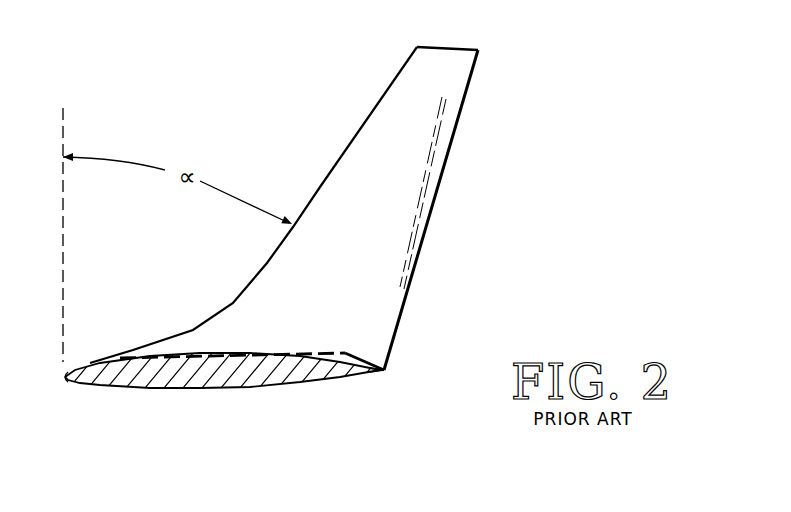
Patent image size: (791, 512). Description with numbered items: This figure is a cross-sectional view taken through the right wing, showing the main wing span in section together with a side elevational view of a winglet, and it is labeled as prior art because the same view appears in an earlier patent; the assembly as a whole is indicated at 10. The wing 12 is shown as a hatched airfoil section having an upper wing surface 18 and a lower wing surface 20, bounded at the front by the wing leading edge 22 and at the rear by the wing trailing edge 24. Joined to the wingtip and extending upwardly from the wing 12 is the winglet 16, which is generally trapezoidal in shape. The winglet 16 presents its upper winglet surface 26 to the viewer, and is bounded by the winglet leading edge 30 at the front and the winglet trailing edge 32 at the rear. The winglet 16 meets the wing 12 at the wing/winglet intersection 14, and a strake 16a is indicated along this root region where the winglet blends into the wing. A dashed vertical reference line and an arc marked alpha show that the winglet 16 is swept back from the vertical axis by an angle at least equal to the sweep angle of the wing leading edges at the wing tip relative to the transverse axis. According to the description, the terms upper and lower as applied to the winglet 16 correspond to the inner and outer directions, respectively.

The prior art aircraft tail assembly 10 is at (295, 251).
The wing 12 is at (251, 376).
The wing/winglet intersection 14 is at (353, 355).
The winglet 16 is at (315, 208).
The strake 16a is at (170, 350).
The upper wing surface 18 is at (243, 352).
The lower wing surface 20 is at (202, 389).
The wing leading edge 22 is at (63, 386).
The wing trailing edge 24 is at (385, 370).
The upper winglet surface 26 is at (365, 183).
The winglet leading edge 30 is at (377, 105).
The winglet trailing edge 32 is at (448, 152).